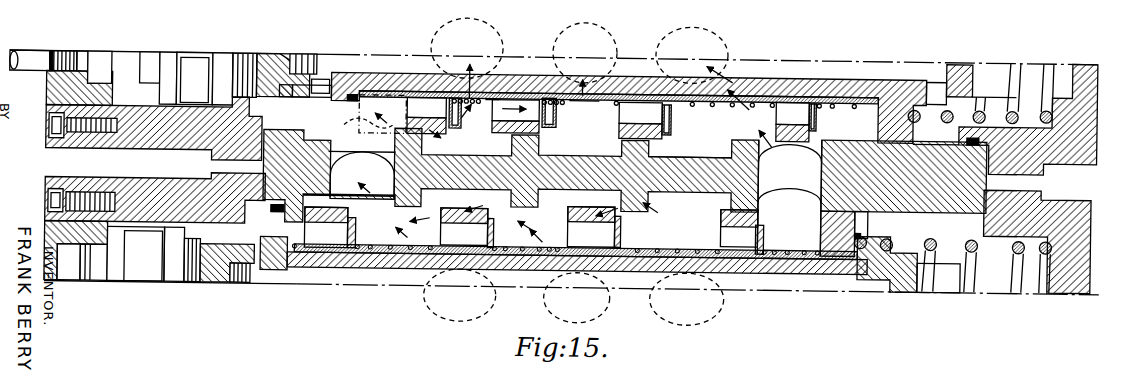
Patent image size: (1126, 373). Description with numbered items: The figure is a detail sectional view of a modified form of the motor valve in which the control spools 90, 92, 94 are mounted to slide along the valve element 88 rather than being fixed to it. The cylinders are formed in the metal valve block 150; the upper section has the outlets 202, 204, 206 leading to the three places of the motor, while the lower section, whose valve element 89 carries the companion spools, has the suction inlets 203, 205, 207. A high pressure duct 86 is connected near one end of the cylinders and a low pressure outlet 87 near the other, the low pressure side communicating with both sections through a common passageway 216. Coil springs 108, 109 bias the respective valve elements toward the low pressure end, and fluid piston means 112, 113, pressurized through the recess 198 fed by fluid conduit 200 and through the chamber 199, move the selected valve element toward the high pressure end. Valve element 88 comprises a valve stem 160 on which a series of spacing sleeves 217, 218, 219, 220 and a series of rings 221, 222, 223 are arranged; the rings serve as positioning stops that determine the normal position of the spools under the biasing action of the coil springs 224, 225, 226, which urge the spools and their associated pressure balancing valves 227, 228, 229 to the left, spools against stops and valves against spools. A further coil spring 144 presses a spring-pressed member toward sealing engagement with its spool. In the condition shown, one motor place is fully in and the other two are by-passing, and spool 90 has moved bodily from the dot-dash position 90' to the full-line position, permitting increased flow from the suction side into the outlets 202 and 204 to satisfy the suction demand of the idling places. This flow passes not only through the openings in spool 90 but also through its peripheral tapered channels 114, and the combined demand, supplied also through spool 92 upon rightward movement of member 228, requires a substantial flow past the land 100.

The fluid conduit 200 is at (39, 70).
The recess 198 is at (103, 50).
The fluid piston means 112 is at (198, 49).
The chamber 199 is at (87, 279).
The fluid piston means 113 is at (154, 281).
The ring 221 is at (352, 88).
The valve stem 160 is at (373, 78).
The spacing sleeve 217 is at (418, 84).
The coil spring 224 is at (456, 91).
The ring 222 is at (493, 84).
The pressure balancing valve 228 is at (543, 90).
The spacing sleeve 218 is at (566, 90).
The ring 223 is at (618, 90).
The spacing sleeve 219 is at (765, 88).
The spacing sleeve 220 is at (852, 91).
The valve element 88 is at (973, 52).
The coil spring 108 is at (981, 104).
The coil spring 109 is at (942, 225).
The coil spring 144 is at (852, 97).
The dot-dash position of spool 90 90' is at (362, 113).
The pressure balancing valve 227 is at (450, 108).
The land 100 is at (378, 128).
The spool 90 is at (450, 128).
The spool 92 is at (538, 130).
The spool 94 is at (662, 128).
The coil spring 225 is at (622, 104).
The pressure balancing valve 229 is at (672, 108).
The coil spring 226 is at (716, 100).
The valve block 150 is at (682, 182).
The tapered channels 114 is at (376, 183).
The high pressure duct 86 is at (786, 198).
The common passageway 216 is at (340, 195).
The low pressure outlet 87 is at (360, 202).
The valve element 89 is at (361, 266).
The high pressure outlet 202 is at (462, 16).
The high pressure outlet 204 is at (583, 14).
The high pressure outlet 206 is at (697, 15).
The suction inlet 203 is at (447, 292).
The suction inlet 205 is at (561, 293).
The suction inlet 207 is at (671, 295).